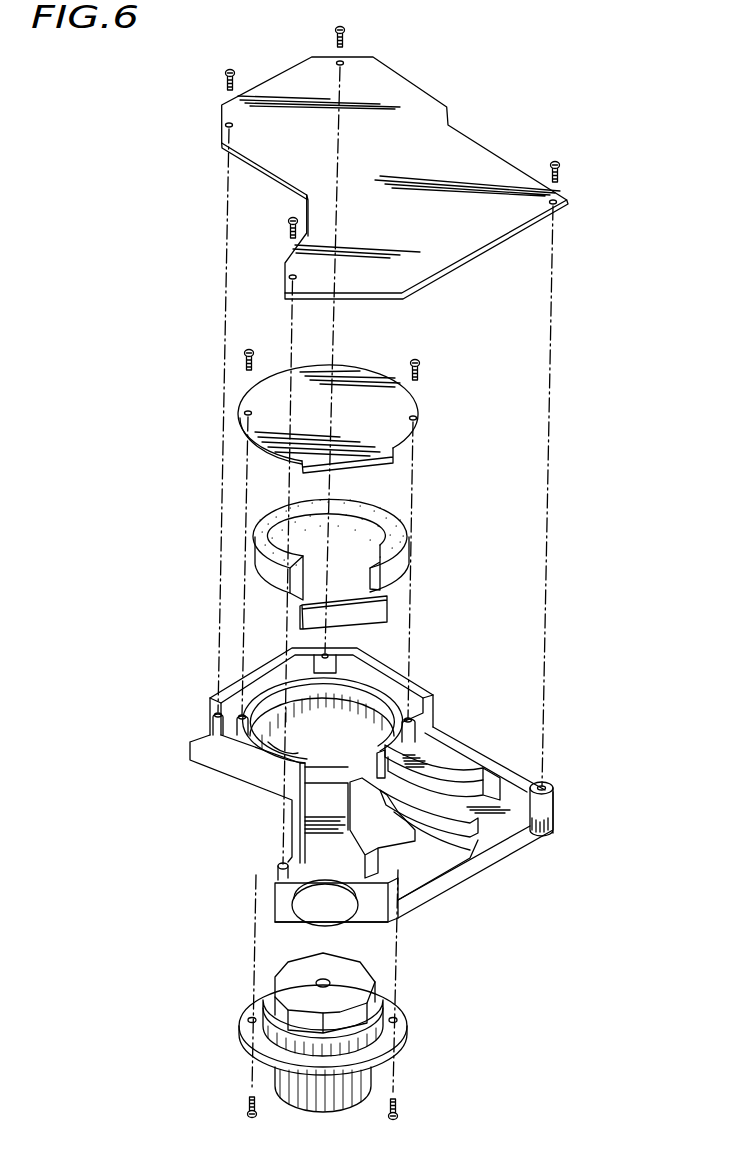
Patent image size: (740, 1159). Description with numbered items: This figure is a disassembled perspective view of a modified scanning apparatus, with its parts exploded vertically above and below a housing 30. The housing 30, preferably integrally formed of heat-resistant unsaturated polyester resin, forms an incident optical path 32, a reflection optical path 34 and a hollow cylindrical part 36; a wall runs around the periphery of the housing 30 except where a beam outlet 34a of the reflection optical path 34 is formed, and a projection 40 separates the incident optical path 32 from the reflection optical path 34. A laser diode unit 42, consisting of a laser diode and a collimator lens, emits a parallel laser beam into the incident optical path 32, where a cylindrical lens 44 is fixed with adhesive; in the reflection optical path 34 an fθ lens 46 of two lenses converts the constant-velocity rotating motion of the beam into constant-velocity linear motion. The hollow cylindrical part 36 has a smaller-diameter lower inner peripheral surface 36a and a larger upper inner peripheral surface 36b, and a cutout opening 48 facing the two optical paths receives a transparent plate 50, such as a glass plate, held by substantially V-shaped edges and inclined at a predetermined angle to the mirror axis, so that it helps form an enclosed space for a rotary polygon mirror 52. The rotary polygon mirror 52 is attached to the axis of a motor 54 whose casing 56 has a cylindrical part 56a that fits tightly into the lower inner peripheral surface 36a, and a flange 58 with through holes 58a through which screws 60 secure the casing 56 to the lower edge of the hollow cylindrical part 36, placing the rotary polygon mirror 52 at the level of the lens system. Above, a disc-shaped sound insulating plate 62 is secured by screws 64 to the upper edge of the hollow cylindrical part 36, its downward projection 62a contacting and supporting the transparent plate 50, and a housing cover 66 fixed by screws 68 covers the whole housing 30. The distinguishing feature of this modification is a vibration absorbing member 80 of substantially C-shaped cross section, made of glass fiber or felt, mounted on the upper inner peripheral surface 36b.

The housing 30 is at (510, 843).
The incident optical path 32 is at (318, 847).
The reflection optical path 34 is at (410, 767).
The beam outlet 34a is at (475, 852).
The hollow cylindrical part 36 is at (268, 690).
The lower inner peripheral surface 36a is at (290, 757).
The upper inner peripheral surface 36b is at (357, 697).
The projection 40 is at (400, 845).
The laser diode unit 42 is at (317, 905).
The cylindrical lens 44 is at (322, 803).
The fθ lens 46 is at (437, 757).
The cutout opening 48 is at (323, 760).
The transparent plate 50 is at (352, 612).
The rotary polygon mirror 52 is at (337, 978).
The motor 54 is at (317, 1092).
The casing 56 is at (373, 1015).
The cylindrical part 56a is at (275, 1033).
The flange 58 is at (375, 1050).
The through holes 58a is at (248, 1017).
The screws 60 is at (245, 1113).
The sound insulating plate 62 is at (395, 432).
The projection 62a is at (353, 470).
The screws 64 is at (249, 350).
The housing cover 66 is at (422, 133).
The screws 68 is at (230, 67).
The vibration absorbing member 80 is at (393, 535).